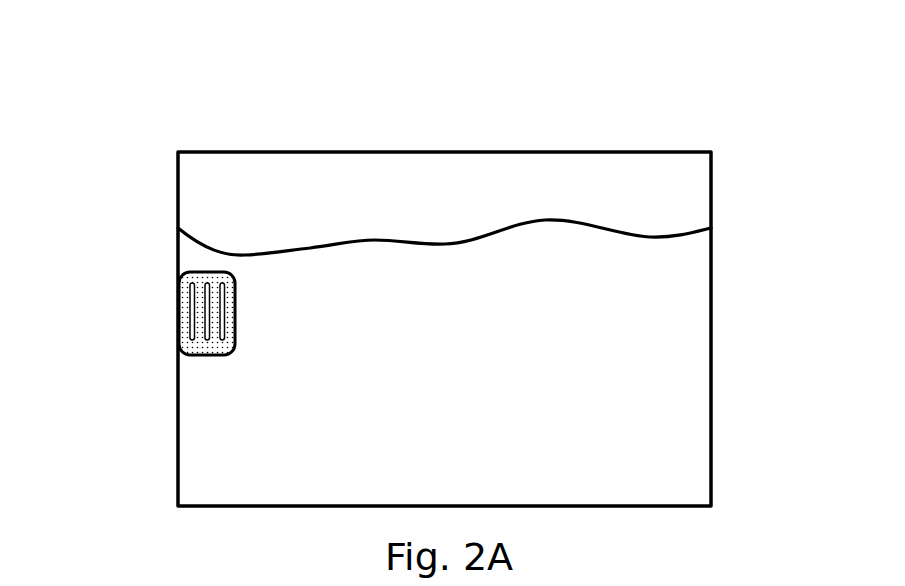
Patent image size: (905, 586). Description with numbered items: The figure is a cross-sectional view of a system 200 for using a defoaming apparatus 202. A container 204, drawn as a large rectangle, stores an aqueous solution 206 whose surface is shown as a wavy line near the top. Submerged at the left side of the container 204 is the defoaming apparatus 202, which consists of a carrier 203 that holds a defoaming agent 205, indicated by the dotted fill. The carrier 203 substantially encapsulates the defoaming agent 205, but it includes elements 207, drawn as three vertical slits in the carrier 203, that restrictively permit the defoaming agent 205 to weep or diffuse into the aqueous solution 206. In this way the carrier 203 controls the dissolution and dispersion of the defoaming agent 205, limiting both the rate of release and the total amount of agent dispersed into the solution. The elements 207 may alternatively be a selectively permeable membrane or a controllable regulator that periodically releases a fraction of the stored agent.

The system 200 is at (147, 78).
The defoaming apparatus 202 is at (146, 321).
The carrier 203 is at (207, 358).
The container 204 is at (711, 425).
The defoaming agent 205 is at (215, 287).
The aqueous solution 206 is at (665, 237).
The slits 207 is at (225, 340).